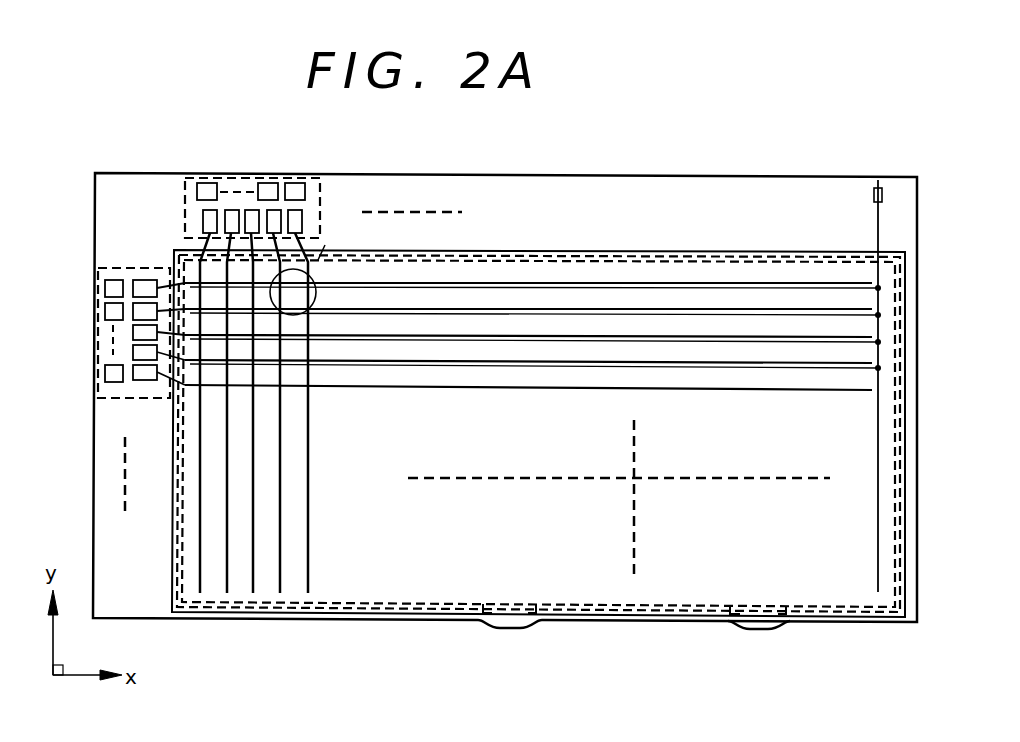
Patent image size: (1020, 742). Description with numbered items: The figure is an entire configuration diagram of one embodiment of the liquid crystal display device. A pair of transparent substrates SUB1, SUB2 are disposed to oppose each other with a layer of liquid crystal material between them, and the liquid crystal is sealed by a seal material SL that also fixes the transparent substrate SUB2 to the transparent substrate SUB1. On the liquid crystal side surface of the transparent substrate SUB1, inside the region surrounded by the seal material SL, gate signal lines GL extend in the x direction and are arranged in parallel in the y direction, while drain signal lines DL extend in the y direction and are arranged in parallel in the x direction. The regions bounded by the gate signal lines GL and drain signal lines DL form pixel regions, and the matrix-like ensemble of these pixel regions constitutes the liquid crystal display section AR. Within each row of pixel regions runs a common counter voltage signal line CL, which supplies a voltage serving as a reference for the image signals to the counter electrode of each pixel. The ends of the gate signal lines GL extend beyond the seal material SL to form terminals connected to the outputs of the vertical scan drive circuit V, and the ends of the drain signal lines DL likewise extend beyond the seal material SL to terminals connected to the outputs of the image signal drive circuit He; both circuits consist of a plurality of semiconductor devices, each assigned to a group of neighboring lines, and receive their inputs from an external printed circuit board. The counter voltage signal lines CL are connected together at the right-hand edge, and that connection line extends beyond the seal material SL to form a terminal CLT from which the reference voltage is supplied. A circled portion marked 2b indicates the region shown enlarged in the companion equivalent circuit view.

The transparent substrate SUB1 is at (775, 177).
The transparent substrate SUB2 is at (652, 250).
The seal material SL is at (572, 606).
The liquid crystal display section AR is at (477, 395).
The image signal drive circuit He is at (186, 180).
The vertical scan drive circuit V is at (98, 355).
The gate signal line GL is at (392, 388).
The counter voltage signal line CL is at (547, 367).
The drain signal line DL is at (308, 475).
The terminal CLT is at (878, 180).
The detail region of FIG. 2B 2b is at (320, 291).